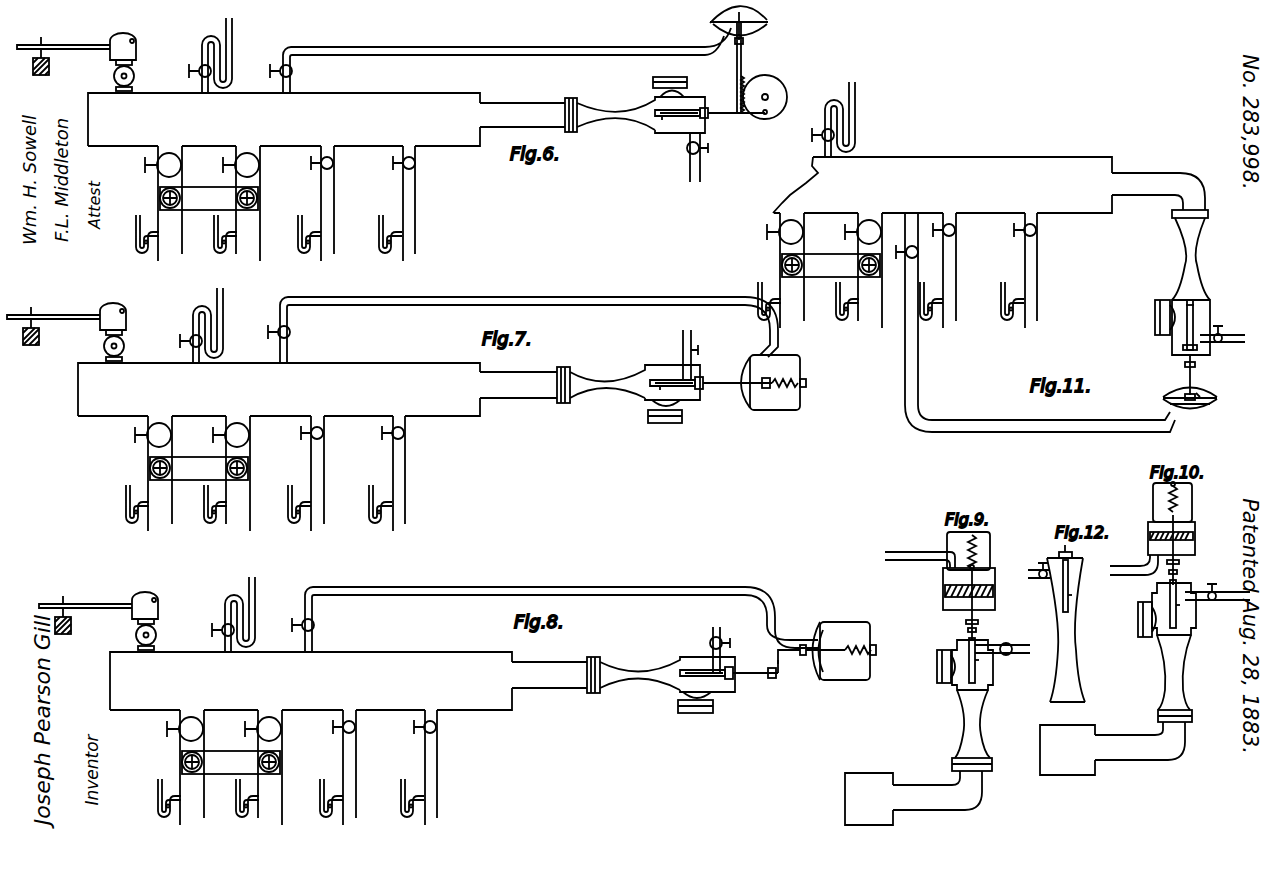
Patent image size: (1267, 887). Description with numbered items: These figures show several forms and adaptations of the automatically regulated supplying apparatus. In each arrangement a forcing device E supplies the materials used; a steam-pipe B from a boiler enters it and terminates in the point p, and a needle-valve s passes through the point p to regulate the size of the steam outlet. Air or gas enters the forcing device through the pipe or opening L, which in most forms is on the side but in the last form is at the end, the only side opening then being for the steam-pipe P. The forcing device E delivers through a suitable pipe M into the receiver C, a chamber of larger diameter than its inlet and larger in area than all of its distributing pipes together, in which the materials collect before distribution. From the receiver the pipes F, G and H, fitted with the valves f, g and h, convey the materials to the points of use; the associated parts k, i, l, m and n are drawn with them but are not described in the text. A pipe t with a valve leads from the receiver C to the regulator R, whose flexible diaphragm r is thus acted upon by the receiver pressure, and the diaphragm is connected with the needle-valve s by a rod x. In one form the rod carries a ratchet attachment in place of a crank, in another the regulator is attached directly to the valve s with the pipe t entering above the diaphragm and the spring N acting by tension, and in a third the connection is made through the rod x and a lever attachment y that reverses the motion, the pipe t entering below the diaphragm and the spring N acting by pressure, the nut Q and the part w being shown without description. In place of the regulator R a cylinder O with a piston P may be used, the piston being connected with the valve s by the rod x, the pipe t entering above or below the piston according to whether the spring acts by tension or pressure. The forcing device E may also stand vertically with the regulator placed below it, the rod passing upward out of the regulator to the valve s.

In FIG. 6, the receiver C is at (284, 119).
In FIG. 7, the receiver C is at (279, 389).
In FIG. 8, the receiver C is at (311, 681).
In FIG. 11, the receiver C is at (942, 185).
In FIG. 9, the receiver C is at (869, 799).
In FIG. 10, the receiver C is at (1067, 750).
In FIG. 6, the pipe M is at (528, 115).
In FIG. 7, the pipe M is at (525, 385).
In FIG. 8, the pipe M is at (556, 675).
In FIG. 11, the pipe M is at (1160, 195).
In FIG. 9, the pipe M is at (937, 790).
In FIG. 10, the pipe M is at (1140, 741).
In FIG. 6, the forcing device E is at (641, 108).
In FIG. 7, the forcing device E is at (635, 376).
In FIG. 8, the forcing device E is at (667, 680).
In FIG. 11, the forcing device E is at (1186, 286).
In FIG. 9, the forcing device E is at (968, 705).
In FIG. 10, the forcing device E is at (1174, 652).
In FIG. 12, the forcing device E is at (1068, 630).
In FIG. 6, the pipe or opening L is at (670, 79).
In FIG. 7, the pipe or opening L is at (665, 421).
In FIG. 8, the pipe or opening L is at (695, 710).
In FIG. 11, the pipe or opening L is at (1156, 317).
In FIG. 9, the pipe or opening L is at (937, 666).
In FIG. 10, the pipe or opening L is at (1137, 619).
In FIG. 12, the pipe or opening L is at (1071, 548).
In FIG. 6, the steam-pipe B is at (697, 163).
In FIG. 7, the steam-pipe B is at (690, 346).
In FIG. 8, the steam-pipe B is at (721, 640).
In FIG. 11, the steam-pipe B is at (1229, 337).
In FIG. 9, the steam-pipe B is at (1002, 656).
In FIG. 10, the steam-pipe B is at (1217, 596).
In FIG. 12, the steam-pipe B is at (1030, 573).
In FIG. 6, the needle-valve s is at (674, 112).
In FIG. 7, the needle-valve s is at (704, 383).
In FIG. 8, the needle-valve s is at (729, 673).
In FIG. 11, the needle-valve s is at (1190, 339).
In FIG. 9, the needle-valve s is at (970, 671).
In FIG. 10, the needle-valve s is at (1171, 613).
In FIG. 12, the needle-valve s is at (1063, 594).
In FIG. 6, the point p is at (663, 124).
In FIG. 7, the point p is at (654, 394).
In FIG. 11, the point p is at (1185, 305).
In FIG. 9, the point p is at (981, 671).
In FIG. 10, the point p is at (1182, 617).
In FIG. 12, the point p is at (1076, 604).
In FIG. 6, the pipe t is at (500, 60).
In FIG. 7, the pipe t is at (532, 321).
In FIG. 8, the pipe t is at (555, 619).
In FIG. 11, the pipe t is at (1035, 322).
In FIG. 9, the pipe t is at (920, 552).
In FIG. 10, the pipe t is at (1134, 565).
In FIG. 6, the siphon pipe k is at (216, 55).
In FIG. 7, the siphon pipe k is at (207, 325).
In FIG. 8, the siphon pipe k is at (239, 614).
In FIG. 11, the siphon pipe k is at (839, 119).
In FIG. 6, the weighted safety valve i is at (79, 62).
In FIG. 7, the weighted safety valve i is at (69, 332).
In FIG. 8, the weighted safety valve i is at (104, 621).
In FIG. 6, the valve f is at (201, 181).
In FIG. 7, the valve f is at (191, 451).
In FIG. 8, the valve f is at (223, 745).
In FIG. 11, the valve f is at (823, 248).
In FIG. 6, the valve g is at (246, 180).
In FIG. 7, the valve g is at (236, 450).
In FIG. 8, the valve g is at (270, 745).
In FIG. 11, the valve g is at (870, 247).
In FIG. 6, the valve h is at (363, 162).
In FIG. 7, the valve h is at (352, 433).
In FIG. 8, the valve h is at (384, 727).
In FIG. 11, the valve h is at (984, 231).
In FIG. 6, the pipe F is at (170, 203).
In FIG. 7, the pipe F is at (160, 473).
In FIG. 8, the pipe F is at (192, 767).
In FIG. 11, the pipe F is at (792, 270).
In FIG. 6, the pipe G is at (248, 203).
In FIG. 7, the pipe G is at (238, 473).
In FIG. 8, the pipe G is at (270, 767).
In FIG. 11, the pipe G is at (870, 270).
In FIG. 6, the pipe H is at (368, 203).
In FIG. 7, the pipe H is at (358, 473).
In FIG. 8, the pipe H is at (390, 767).
In FIG. 11, the pipe H is at (990, 270).
In FIG. 6, the drain siphon of chamber F l is at (139, 234).
In FIG. 7, the drain siphon of chamber F l is at (129, 504).
In FIG. 8, the drain siphon of chamber F l is at (163, 798).
In FIG. 11, the drain siphon of chamber F l is at (769, 301).
In FIG. 6, the drain siphon of chamber G m is at (215, 234).
In FIG. 7, the drain siphon of chamber G m is at (215, 504).
In FIG. 8, the drain siphon of chamber G m is at (238, 798).
In FIG. 11, the drain siphon of chamber G m is at (838, 301).
In FIG. 6, the drain siphon of chamber H n is at (301, 234).
In FIG. 7, the drain siphon of chamber H n is at (291, 504).
In FIG. 8, the drain siphon of chamber H n is at (323, 798).
In FIG. 11, the drain siphon of chamber H n is at (931, 298).
In FIG. 6, the rod x is at (736, 75).
In FIG. 8, the rod x is at (800, 661).
In FIG. 9, the rod x is at (976, 605).
In FIG. 10, the rod x is at (1177, 550).
In FIG. 6, the lever attachment y is at (765, 97).
In FIG. 8, the lever attachment y is at (788, 660).
In FIG. 6, the regulating device R is at (750, 25).
In FIG. 7, the regulating device R is at (770, 394).
In FIG. 8, the regulating device R is at (842, 661).
In FIG. 11, the regulating device R is at (1182, 401).
In FIG. 7, the flexible diaphragm r is at (777, 379).
In FIG. 8, the flexible diaphragm r is at (820, 651).
In FIG. 11, the flexible diaphragm r is at (1190, 410).
In FIG. 7, the adjusting nut Q is at (810, 385).
In FIG. 8, the adjusting nut Q is at (879, 646).
In FIG. 9, the adjusting nut Q is at (988, 549).
In FIG. 10, the adjusting nut Q is at (1188, 487).
In FIG. 8, the spring N is at (858, 643).
In FIG. 9, the spring N is at (974, 551).
In FIG. 10, the spring N is at (1172, 502).
In FIG. 9, the cylinder O is at (962, 589).
In FIG. 10, the cylinder O is at (1177, 538).
In FIG. 9, the steam-pipe P is at (969, 598).
In FIG. 10, the steam-pipe P is at (1171, 543).
In FIG. 11, the fan wheel w is at (1204, 392).